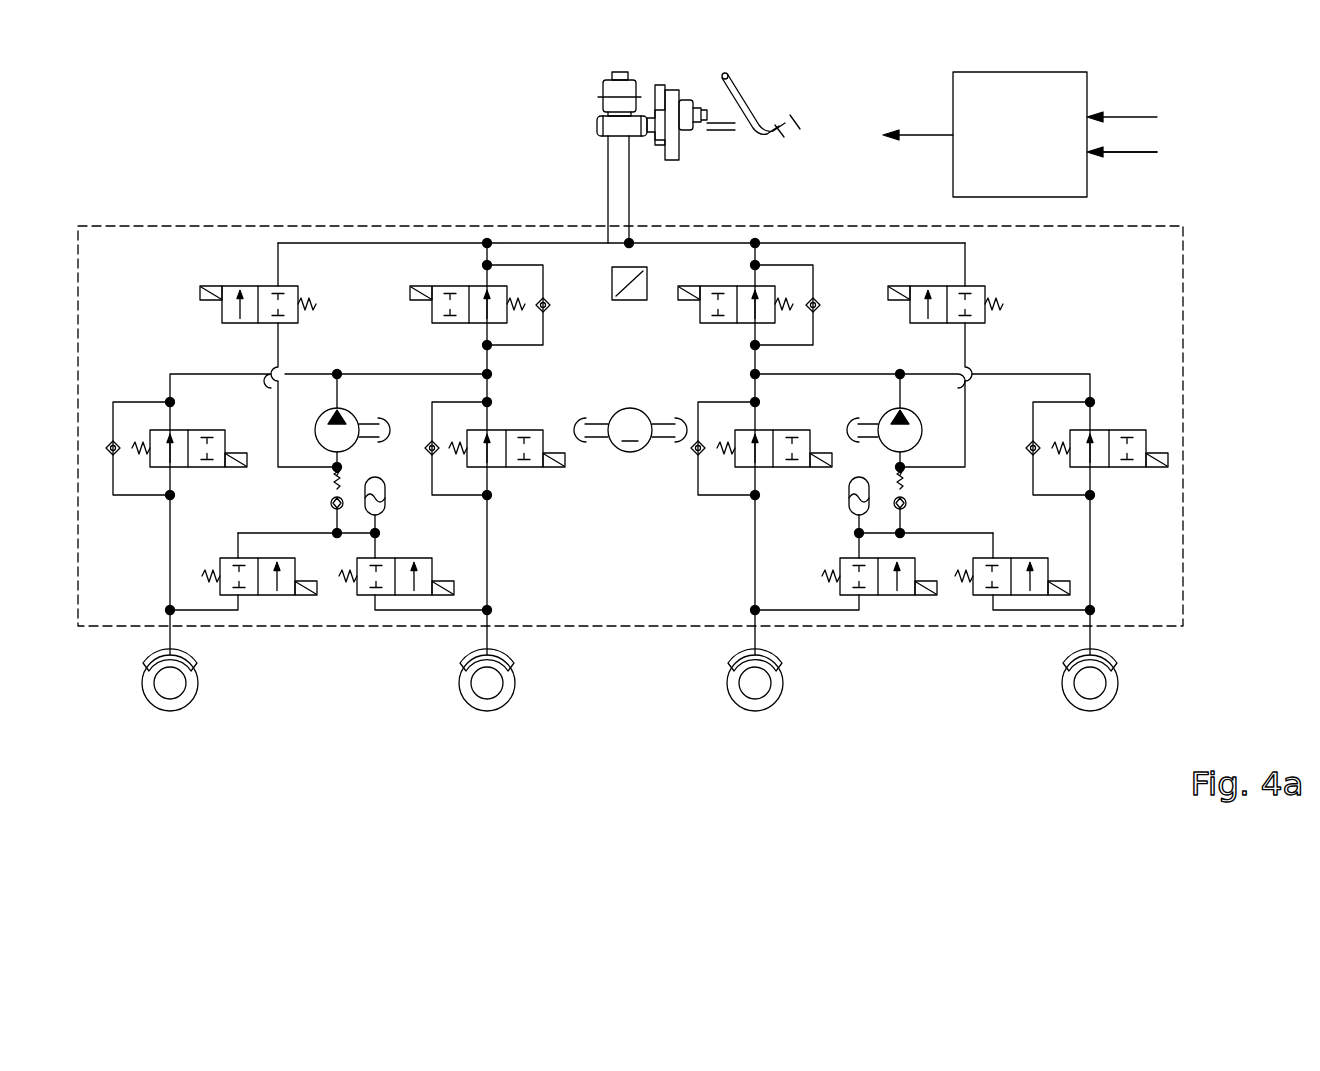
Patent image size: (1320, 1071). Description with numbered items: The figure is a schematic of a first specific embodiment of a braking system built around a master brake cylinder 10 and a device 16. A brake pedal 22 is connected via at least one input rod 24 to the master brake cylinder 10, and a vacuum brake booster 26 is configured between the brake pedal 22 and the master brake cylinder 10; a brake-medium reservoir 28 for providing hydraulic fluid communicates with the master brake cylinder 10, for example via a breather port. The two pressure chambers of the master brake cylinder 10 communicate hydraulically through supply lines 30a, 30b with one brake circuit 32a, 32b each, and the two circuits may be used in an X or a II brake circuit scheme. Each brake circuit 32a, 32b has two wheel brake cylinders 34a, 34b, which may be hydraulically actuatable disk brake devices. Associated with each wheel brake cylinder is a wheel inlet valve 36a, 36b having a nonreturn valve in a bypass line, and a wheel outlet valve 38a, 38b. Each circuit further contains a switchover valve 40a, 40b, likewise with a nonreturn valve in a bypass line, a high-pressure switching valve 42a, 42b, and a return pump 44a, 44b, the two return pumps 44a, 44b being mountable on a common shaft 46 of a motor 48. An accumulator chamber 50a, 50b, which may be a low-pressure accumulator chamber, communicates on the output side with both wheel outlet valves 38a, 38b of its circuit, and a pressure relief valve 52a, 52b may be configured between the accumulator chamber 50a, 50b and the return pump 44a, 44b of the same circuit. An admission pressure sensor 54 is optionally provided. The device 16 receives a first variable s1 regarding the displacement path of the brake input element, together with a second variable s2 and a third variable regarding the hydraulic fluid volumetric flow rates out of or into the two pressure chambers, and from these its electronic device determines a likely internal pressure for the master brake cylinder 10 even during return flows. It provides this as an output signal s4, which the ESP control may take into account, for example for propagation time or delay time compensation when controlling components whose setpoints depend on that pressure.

The master brake cylinder 10 is at (597, 127).
The device 16 is at (1020, 72).
The brake pedal 22 is at (754, 107).
The input rod 24 is at (732, 138).
The vacuum brake booster 26 is at (675, 83).
The brake-medium reservoir 28 is at (628, 72).
The supply line 30a is at (630, 191).
The supply line 30b is at (608, 191).
The brake circuit 32a is at (918, 716).
The brake circuit 32b is at (330, 716).
The wheel brake cylinder 34a is at (755, 712).
The wheel brake cylinder 34b is at (170, 712).
The wheel inlet valve 36a is at (784, 430).
The wheel inlet valve 36b is at (204, 430).
The wheel outlet valve 38a is at (886, 606).
The wheel outlet valve 38b is at (268, 606).
The switchover valve 40a is at (707, 323).
The switchover valve 40b is at (432, 312).
The high-pressure switching valve 42a is at (908, 312).
The high-pressure switching valve 42b is at (222, 312).
The return pump 44a is at (882, 420).
The return pump 44b is at (357, 418).
The common shaft 46 is at (664, 450).
The motor 48 is at (630, 452).
The accumulator chamber 50a is at (848, 502).
The accumulator chamber 50b is at (388, 502).
The pressure relief valve 52a is at (908, 502).
The pressure relief valve 52b is at (330, 502).
The admission pressure sensor 54 is at (630, 300).
The first variable s1 is at (1133, 117).
The second variable s2 is at (1125, 153).
The output signal s4 is at (912, 135).